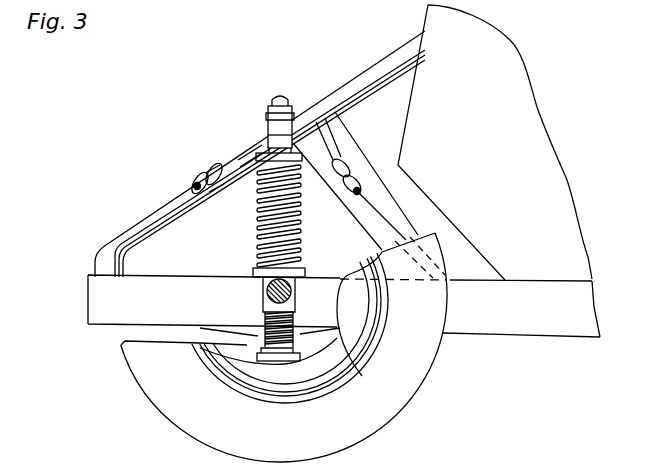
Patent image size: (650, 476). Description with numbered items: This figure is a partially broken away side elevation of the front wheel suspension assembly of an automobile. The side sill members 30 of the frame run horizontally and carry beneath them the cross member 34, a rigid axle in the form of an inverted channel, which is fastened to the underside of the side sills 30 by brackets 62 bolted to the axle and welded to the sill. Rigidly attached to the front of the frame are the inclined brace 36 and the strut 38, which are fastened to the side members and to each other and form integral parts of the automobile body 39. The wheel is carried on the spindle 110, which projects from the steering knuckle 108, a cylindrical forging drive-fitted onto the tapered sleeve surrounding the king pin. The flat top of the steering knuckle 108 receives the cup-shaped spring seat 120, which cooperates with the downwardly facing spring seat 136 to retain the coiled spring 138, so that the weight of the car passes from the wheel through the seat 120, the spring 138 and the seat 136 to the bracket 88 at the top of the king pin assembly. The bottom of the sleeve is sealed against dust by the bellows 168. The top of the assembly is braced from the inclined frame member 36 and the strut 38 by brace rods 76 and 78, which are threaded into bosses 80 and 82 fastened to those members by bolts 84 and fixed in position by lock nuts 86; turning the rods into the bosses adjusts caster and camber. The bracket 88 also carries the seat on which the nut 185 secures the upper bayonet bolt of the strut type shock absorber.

The side sill member 30 is at (208, 271).
The cross member 34 is at (257, 351).
The inclined brace 36 is at (327, 96).
The strut 38 is at (338, 150).
The automobile body 39 is at (523, 62).
The bracket 62 is at (224, 328).
The brace rod 76 is at (244, 152).
The brace rod 78 is at (333, 131).
The threaded boss 80 is at (202, 178).
The threaded boss 82 is at (349, 171).
The bolt 84 is at (185, 183).
The lock nut 86 is at (220, 168).
The bracket 88 is at (273, 130).
The steering knuckle 108 is at (297, 286).
The spindle 110 is at (262, 296).
The spring seat 120 is at (306, 272).
The spring seat 136 is at (300, 159).
The coiled spring 138 is at (297, 212).
The bellows 168 is at (295, 330).
The nut 185 is at (300, 112).